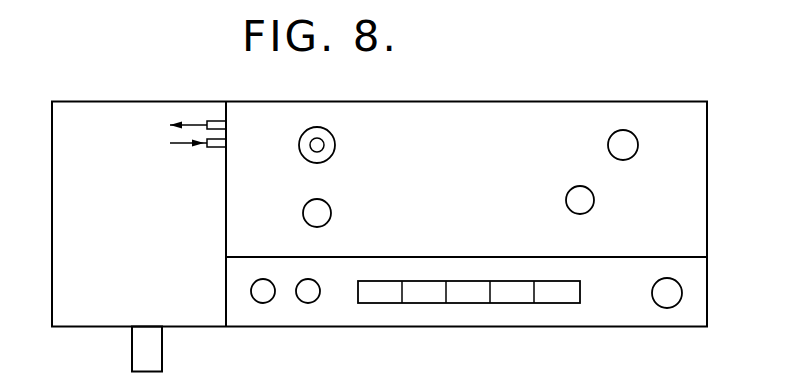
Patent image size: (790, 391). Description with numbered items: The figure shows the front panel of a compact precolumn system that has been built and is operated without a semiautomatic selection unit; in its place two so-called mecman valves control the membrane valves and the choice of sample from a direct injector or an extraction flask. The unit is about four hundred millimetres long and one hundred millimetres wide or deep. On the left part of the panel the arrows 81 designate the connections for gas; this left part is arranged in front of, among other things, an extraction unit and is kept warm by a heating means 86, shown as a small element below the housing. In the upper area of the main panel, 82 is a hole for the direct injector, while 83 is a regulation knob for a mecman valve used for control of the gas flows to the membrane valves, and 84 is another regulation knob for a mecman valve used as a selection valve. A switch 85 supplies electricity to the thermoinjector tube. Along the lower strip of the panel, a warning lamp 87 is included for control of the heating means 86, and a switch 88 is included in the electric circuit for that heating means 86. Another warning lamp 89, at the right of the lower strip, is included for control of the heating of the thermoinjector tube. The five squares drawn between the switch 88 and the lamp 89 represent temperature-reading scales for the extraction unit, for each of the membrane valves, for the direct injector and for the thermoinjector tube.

The arrows designating connections for gas 81 is at (168, 129).
The hole for the direct injector 82 is at (320, 127).
The regulation knob for a mecman valve 83 is at (624, 130).
The regulation knob for a mecman valve used as a selection valve 84 is at (331, 209).
The switch for electricity to the thermoinjector tube 85 is at (566, 196).
The heating means 86 is at (147, 346).
The warning lamp 87 is at (262, 279).
The switch 88 is at (317, 281).
The warning lamp 89 is at (662, 307).